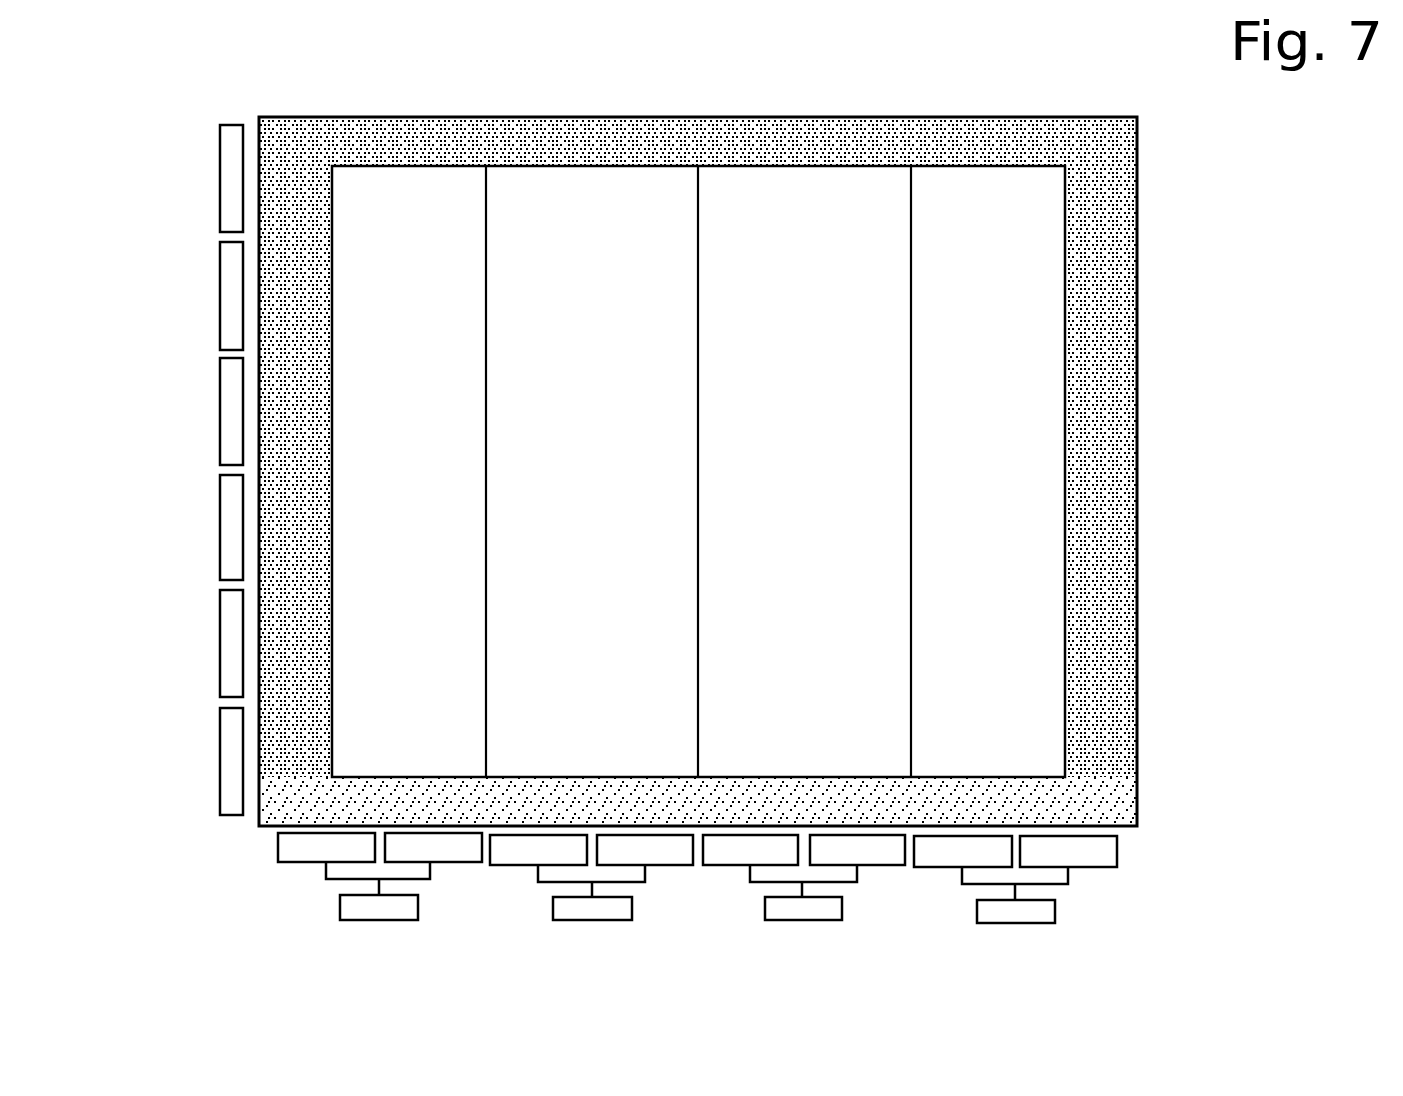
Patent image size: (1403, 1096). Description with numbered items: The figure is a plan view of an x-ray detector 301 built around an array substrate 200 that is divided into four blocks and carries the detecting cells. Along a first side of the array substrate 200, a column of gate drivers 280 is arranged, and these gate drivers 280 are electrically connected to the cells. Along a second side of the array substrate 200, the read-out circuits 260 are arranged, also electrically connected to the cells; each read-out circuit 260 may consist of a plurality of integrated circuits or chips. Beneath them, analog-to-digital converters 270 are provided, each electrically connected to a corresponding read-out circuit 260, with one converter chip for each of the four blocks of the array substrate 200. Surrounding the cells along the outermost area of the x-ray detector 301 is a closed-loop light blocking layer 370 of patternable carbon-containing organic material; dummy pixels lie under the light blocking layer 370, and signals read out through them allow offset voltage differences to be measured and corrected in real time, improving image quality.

The x-ray detector 301 is at (1003, 57).
The array substrate 200 is at (1137, 218).
The light blocking layer 370 is at (1116, 312).
The gate drivers 280 is at (220, 176).
The read-out circuits 260 is at (278, 845).
The analog-to-digital converters 270 is at (340, 905).